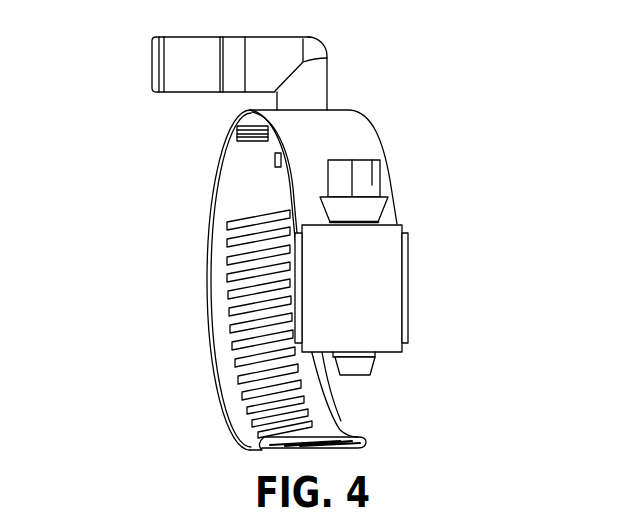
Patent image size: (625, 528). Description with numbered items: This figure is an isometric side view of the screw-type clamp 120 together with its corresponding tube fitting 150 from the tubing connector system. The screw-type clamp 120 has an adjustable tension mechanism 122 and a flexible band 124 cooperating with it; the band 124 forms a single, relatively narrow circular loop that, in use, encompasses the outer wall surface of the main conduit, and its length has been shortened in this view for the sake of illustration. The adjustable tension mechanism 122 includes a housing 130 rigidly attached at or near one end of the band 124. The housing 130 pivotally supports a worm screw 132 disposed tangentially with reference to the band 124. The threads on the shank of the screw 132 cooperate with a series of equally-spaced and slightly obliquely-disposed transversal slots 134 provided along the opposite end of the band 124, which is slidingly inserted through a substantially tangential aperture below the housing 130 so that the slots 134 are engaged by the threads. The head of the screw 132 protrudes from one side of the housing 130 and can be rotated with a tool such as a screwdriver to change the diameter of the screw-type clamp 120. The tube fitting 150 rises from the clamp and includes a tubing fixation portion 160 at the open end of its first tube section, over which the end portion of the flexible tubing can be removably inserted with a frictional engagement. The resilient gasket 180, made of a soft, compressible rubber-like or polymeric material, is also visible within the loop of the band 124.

The screw-type clamp 120 is at (333, 294).
The adjustable tension mechanism 122 is at (426, 265).
The flexible band 124 is at (222, 382).
The housing 130 is at (377, 265).
The worm screw 132 is at (365, 178).
The transversal slots 134 is at (232, 300).
The tube fitting 150 is at (285, 64).
The tubing fixation portion 160 is at (193, 57).
The resilient gasket 180 is at (242, 135).